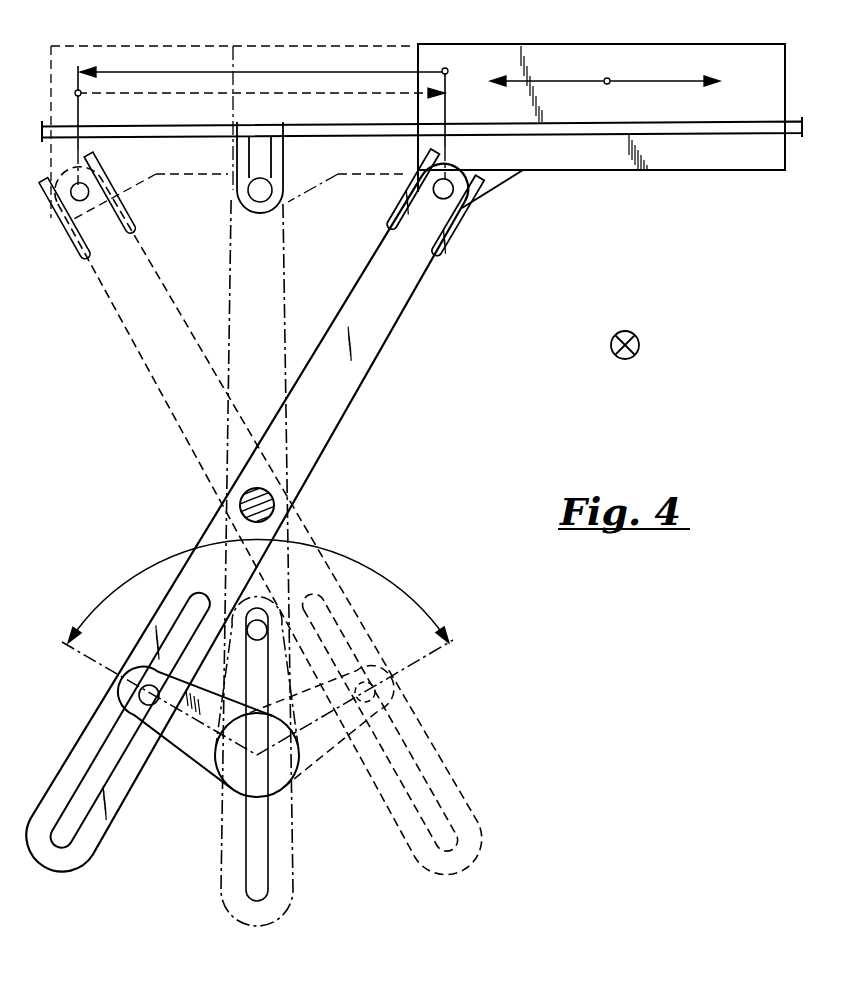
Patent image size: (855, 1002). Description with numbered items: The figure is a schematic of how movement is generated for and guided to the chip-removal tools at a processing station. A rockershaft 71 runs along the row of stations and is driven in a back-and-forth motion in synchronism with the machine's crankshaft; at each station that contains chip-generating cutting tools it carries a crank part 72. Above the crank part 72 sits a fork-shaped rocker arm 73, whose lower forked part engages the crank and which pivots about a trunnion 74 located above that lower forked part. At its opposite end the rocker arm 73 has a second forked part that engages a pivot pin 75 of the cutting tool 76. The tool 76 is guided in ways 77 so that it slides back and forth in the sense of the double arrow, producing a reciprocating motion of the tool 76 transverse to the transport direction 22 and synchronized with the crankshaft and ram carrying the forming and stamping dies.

The transport direction 22 is at (640, 347).
The rockershaft 71 is at (228, 788).
The crank part 72 is at (198, 745).
The fork-shaped rocker arm 73 is at (358, 378).
The trunnion 74 is at (268, 500).
The pivot pin 75 is at (455, 203).
The chip-generating cutting tool 76 is at (617, 63).
The ways 77 is at (188, 135).